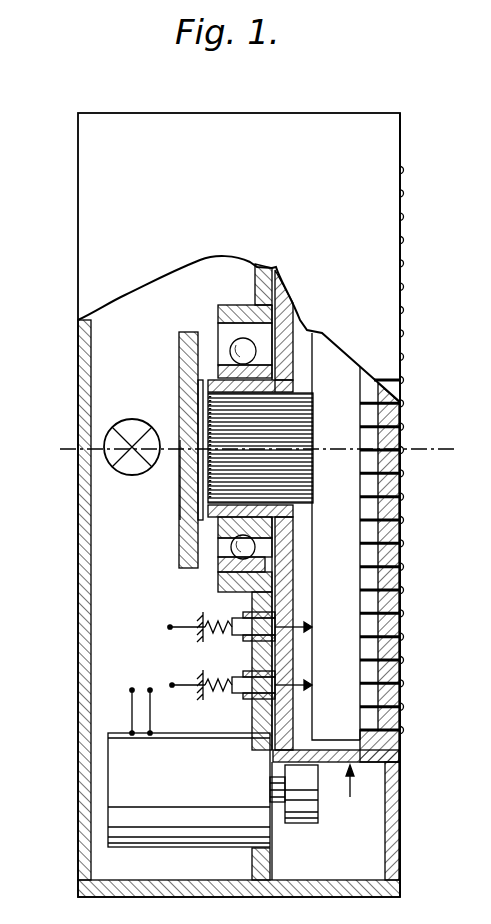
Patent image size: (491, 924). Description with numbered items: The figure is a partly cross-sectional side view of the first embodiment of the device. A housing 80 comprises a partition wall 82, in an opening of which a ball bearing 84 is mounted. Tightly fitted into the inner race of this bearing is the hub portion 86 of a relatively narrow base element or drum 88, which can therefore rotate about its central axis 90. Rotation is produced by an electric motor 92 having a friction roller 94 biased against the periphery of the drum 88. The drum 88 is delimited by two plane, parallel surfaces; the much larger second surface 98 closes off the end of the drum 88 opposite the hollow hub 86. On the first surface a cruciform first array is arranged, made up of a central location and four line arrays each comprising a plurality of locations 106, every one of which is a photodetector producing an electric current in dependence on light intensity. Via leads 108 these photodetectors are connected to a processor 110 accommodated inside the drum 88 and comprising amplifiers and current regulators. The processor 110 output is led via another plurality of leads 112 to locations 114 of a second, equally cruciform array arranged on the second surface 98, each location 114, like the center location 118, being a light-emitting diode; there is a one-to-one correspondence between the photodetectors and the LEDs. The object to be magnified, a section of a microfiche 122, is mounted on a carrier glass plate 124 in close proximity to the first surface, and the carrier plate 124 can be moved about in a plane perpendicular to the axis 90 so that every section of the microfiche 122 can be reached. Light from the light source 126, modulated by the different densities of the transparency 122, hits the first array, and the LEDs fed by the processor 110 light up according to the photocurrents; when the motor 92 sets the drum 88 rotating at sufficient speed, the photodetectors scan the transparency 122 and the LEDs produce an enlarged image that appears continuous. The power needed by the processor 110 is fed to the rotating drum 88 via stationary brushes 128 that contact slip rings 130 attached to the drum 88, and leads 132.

The housing 80 is at (78, 404).
The partition wall 82 is at (258, 262).
The ball bearing 84 is at (220, 322).
The hub portion 86 is at (212, 376).
The drum 88 is at (348, 796).
The central axis 90 is at (428, 449).
The electric motor 92 is at (197, 830).
The friction roller 94 is at (302, 812).
The second surface 98 is at (400, 626).
The locations 106 is at (200, 528).
The leads 108 is at (300, 412).
The processor 110 is at (348, 559).
The leads 112 is at (368, 492).
The locations 114 is at (386, 495).
The center location 118 is at (402, 455).
The microfiche 122 is at (182, 489).
The carrier glass plate 124 is at (180, 352).
The light source 126 is at (110, 456).
The stationary brushes 128 is at (238, 678).
The slip rings 130 is at (290, 620).
The leads 132 is at (302, 684).